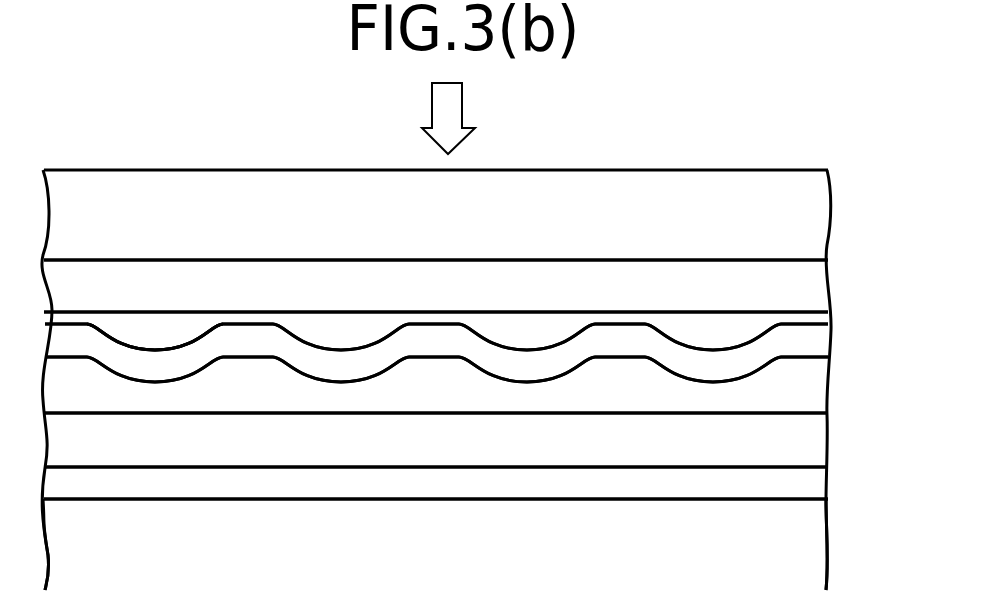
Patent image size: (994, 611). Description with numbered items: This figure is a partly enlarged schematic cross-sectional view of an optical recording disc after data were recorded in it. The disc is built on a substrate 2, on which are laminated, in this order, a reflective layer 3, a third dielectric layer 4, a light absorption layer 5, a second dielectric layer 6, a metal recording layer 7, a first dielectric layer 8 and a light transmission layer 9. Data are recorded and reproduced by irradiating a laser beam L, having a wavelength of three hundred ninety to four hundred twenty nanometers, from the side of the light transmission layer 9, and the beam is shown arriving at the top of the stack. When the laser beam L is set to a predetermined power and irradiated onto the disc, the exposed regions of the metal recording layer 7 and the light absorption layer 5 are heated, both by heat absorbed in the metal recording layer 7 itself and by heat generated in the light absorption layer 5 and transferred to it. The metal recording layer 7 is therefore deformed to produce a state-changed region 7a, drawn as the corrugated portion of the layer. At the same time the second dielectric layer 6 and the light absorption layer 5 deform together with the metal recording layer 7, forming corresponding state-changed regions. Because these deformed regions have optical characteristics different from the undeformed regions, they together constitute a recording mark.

The laser beam L is at (462, 115).
The light transmission layer 9 is at (818, 207).
The first dielectric layer 8 is at (818, 282).
The metal recording layer 7 is at (822, 316).
The state-changed region 7a is at (123, 348).
The second dielectric layer 6 is at (818, 345).
The light absorption layer 5 is at (810, 398).
The third dielectric layer 4 is at (813, 443).
The reflective layer 3 is at (818, 478).
The substrate 2 is at (438, 572).